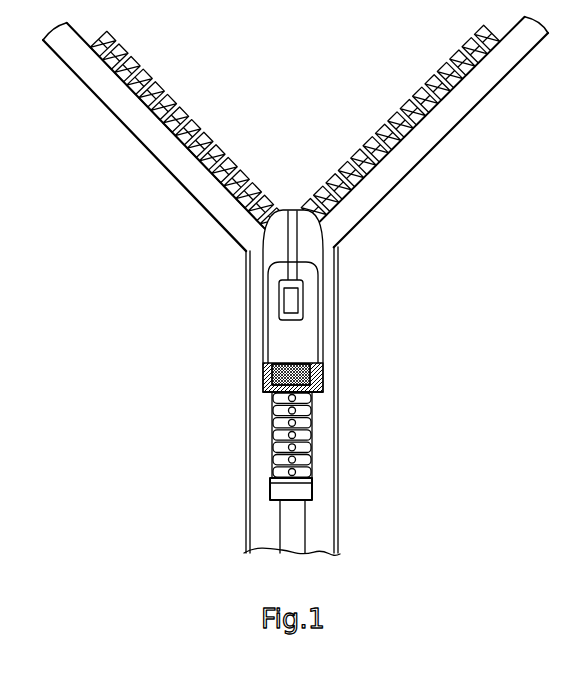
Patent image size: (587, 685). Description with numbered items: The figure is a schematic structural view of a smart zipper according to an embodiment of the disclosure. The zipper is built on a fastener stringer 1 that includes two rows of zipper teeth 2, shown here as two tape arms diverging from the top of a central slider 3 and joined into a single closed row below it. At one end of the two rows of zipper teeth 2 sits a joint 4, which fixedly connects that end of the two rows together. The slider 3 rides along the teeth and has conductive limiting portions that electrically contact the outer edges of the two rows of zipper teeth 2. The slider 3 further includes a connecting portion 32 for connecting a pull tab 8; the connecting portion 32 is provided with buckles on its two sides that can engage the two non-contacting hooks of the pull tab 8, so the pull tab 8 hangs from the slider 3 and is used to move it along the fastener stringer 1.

The fastener stringer 1 is at (98, 113).
The zipper teeth 2 is at (103, 43).
The slider 3 is at (250, 251).
The connecting portion 32 is at (288, 243).
The pull tab 8 is at (253, 340).
The joint 4 is at (292, 487).